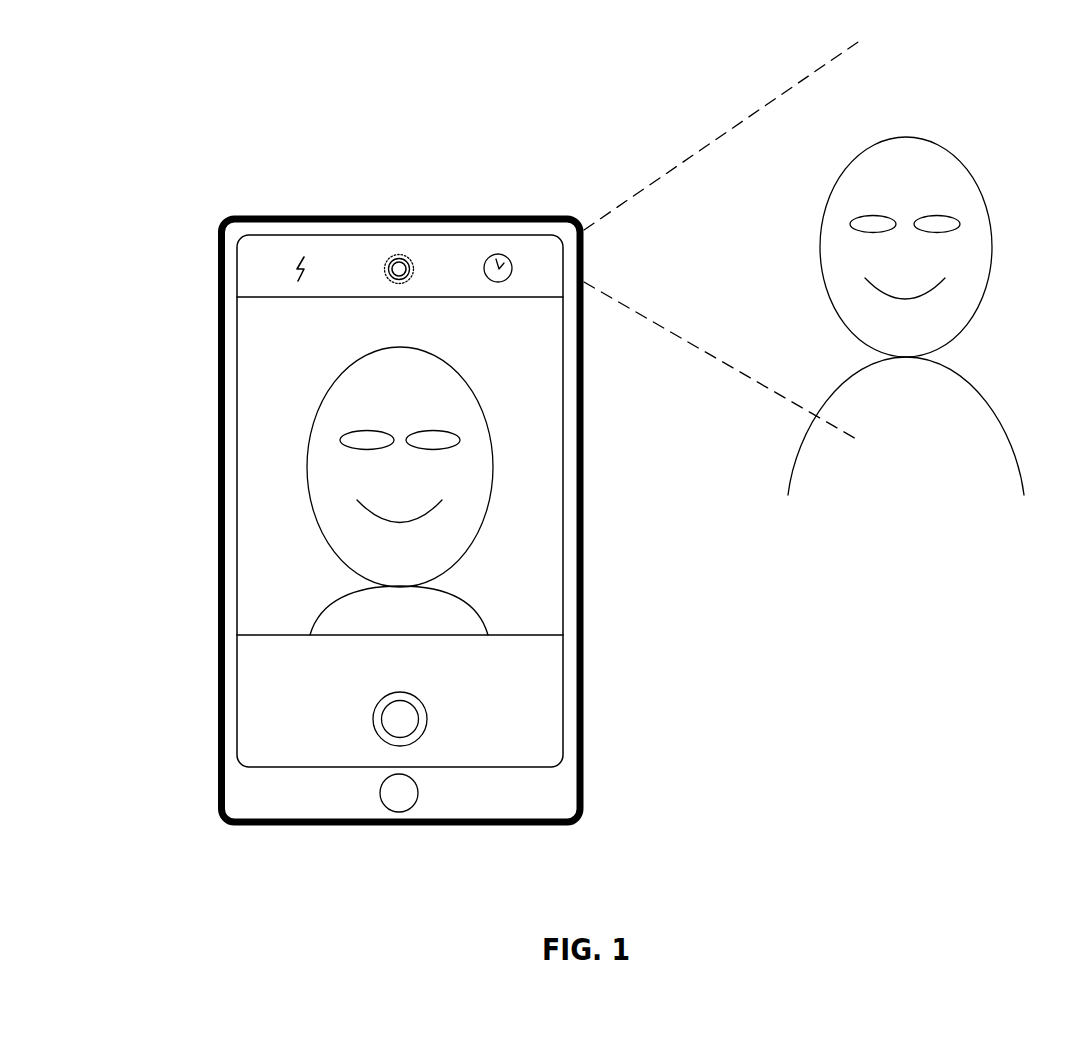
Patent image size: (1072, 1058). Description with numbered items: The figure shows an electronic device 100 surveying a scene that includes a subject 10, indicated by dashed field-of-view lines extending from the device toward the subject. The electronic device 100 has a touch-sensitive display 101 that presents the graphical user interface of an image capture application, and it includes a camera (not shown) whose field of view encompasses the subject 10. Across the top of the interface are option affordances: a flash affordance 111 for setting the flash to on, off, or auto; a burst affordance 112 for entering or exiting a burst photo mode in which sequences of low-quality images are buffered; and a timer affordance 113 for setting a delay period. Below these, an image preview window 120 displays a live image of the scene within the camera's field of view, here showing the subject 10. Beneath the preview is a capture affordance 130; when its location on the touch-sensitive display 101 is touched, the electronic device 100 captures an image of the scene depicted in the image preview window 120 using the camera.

The subject 10 is at (937, 131).
The electronic device 100 is at (353, 195).
The touch-sensitive display 101 is at (232, 564).
The flash affordance 111 is at (299, 286).
The burst affordance 112 is at (400, 288).
The timer affordance 113 is at (501, 287).
The image preview window 120 is at (255, 413).
The capture affordance 130 is at (373, 720).